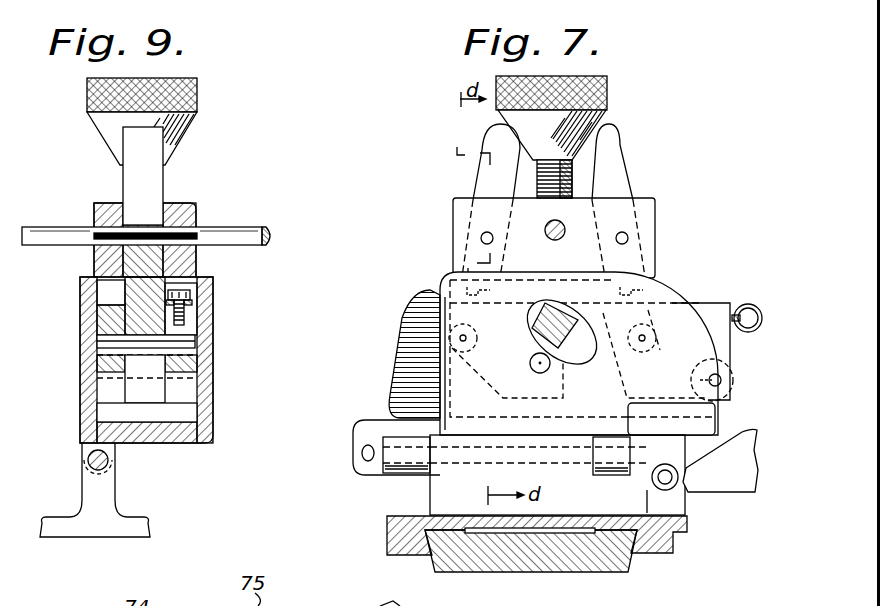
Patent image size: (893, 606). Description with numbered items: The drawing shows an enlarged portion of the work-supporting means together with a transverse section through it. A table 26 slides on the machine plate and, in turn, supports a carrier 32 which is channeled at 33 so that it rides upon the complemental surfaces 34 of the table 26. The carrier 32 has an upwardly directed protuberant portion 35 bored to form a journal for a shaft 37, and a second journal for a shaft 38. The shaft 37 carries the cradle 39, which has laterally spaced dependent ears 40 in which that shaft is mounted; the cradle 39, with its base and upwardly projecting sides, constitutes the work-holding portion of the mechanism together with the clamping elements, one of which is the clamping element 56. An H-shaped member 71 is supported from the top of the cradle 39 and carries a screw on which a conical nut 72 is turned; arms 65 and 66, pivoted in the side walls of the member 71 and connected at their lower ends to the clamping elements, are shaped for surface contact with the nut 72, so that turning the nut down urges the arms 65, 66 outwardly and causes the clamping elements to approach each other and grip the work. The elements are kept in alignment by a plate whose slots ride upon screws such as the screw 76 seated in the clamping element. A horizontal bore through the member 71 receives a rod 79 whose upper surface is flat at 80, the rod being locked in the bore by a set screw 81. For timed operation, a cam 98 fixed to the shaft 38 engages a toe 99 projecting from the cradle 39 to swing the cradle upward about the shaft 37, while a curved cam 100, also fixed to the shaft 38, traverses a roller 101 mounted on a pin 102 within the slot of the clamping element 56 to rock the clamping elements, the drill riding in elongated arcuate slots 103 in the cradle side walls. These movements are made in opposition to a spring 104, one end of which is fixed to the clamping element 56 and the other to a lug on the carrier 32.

In FIG. 7, the table 26 is at (610, 560).
In FIG. 7, the carrier 32 is at (388, 537).
In FIG. 7, the channel 33 is at (417, 543).
In FIG. 7, the complemental surfaces 34 is at (637, 550).
In FIG. 9, the protuberant portion 35 is at (105, 488).
In FIG. 7, the protuberant portion 35 is at (440, 487).
In FIG. 9, the shaft 37 is at (88, 457).
In FIG. 7, the shaft 37 is at (362, 453).
In FIG. 7, the shaft 38 is at (662, 478).
In FIG. 9, the cradle 39 is at (213, 409).
In FIG. 7, the dependent ears 40 is at (360, 473).
In FIG. 7, the clamping element 56 is at (695, 303).
In FIG. 9, the arm 65 is at (152, 180).
In FIG. 7, the arm 65 is at (487, 188).
In FIG. 7, the arm 66 is at (608, 162).
In FIG. 9, the H-shaped member 71 is at (187, 207).
In FIG. 7, the H-shaped member 71 is at (655, 215).
In FIG. 7, the conical nut 72 is at (605, 98).
In FIG. 9, the screw 76 is at (186, 294).
In FIG. 9, the rod 79 is at (282, 240).
In FIG. 9, the flat surface 80 is at (267, 230).
In FIG. 7, the set screw 81 is at (567, 182).
In FIG. 7, the cam 98 is at (720, 460).
In FIG. 7, the toe 99 is at (677, 430).
In FIG. 7, the cam 100 is at (720, 481).
In FIG. 7, the roller 101 is at (733, 382).
In FIG. 7, the pin 102 is at (717, 377).
In FIG. 7, the arcuate slots 103 is at (537, 325).
In FIG. 7, the spring 104 is at (743, 303).